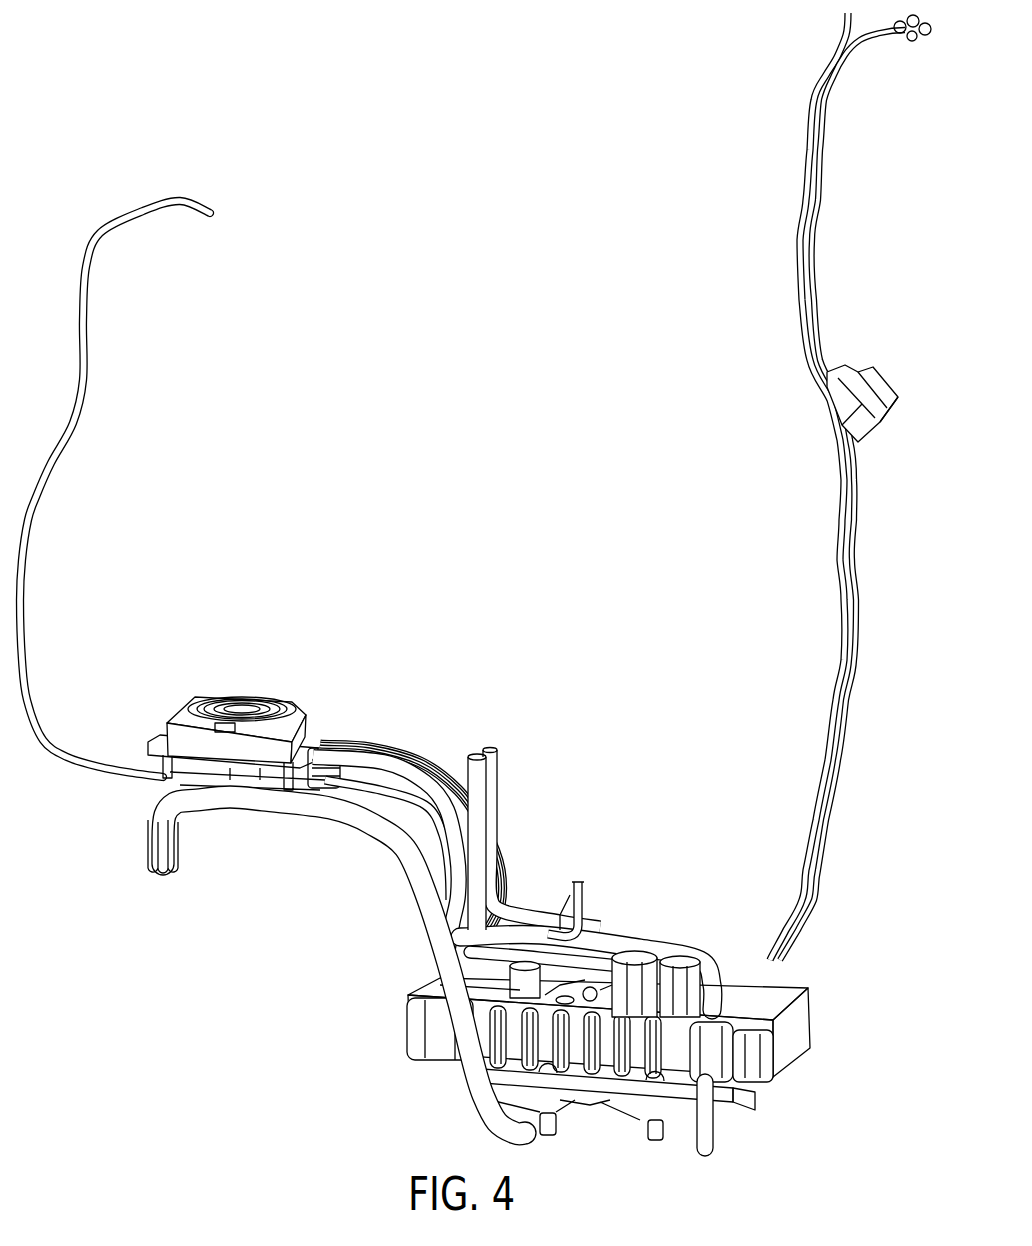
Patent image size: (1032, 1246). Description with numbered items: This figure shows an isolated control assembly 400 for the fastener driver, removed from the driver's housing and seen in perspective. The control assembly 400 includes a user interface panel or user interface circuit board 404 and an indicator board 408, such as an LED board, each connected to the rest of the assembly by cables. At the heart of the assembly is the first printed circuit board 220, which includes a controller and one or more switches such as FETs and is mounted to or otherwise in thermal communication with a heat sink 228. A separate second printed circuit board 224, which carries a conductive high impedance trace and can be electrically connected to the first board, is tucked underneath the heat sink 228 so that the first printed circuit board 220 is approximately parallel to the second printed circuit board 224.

The control assembly 400 is at (270, 126).
The user interface circuit board 404 is at (258, 700).
The indicator board 408 is at (873, 376).
The first printed circuit board 220 is at (567, 993).
The second printed circuit board 224 is at (625, 1093).
The heat sink 228 is at (412, 1034).